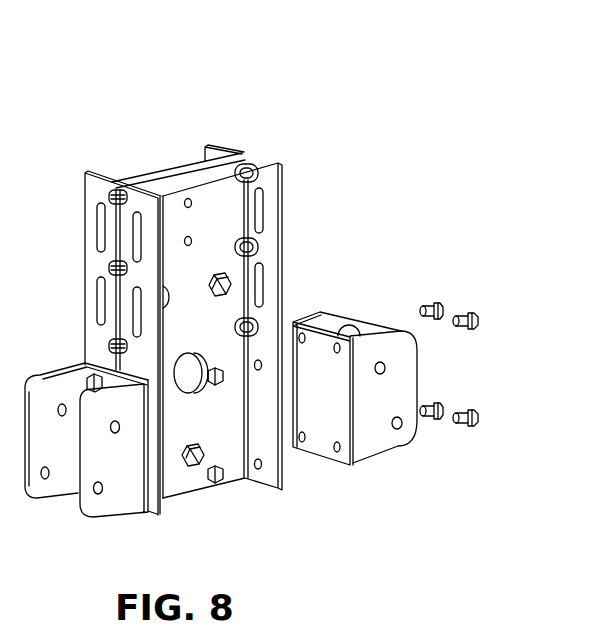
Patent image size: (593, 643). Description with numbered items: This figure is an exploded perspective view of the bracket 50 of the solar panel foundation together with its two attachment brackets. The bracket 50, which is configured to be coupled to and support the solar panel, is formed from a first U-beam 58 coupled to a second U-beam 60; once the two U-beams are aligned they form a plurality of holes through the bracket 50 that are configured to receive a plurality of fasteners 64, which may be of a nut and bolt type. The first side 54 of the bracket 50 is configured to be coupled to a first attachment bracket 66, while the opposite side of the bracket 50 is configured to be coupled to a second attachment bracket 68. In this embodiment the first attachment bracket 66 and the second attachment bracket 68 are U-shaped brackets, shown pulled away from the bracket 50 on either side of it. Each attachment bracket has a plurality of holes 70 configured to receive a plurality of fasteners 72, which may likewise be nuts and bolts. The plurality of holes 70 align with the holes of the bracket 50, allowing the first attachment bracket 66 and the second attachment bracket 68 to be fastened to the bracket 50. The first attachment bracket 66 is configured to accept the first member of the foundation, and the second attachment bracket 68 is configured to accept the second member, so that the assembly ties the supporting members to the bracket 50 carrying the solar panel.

The bracket 50 is at (316, 92).
The first side 54 is at (120, 232).
The first U-beam 58 is at (233, 185).
The second U-beam 60 is at (227, 155).
The plurality of fasteners 64 is at (229, 284).
The first attachment bracket 66 is at (100, 427).
The second attachment bracket 68 is at (367, 353).
The plurality of holes 70 is at (337, 347).
The plurality of fasteners 72 is at (458, 417).